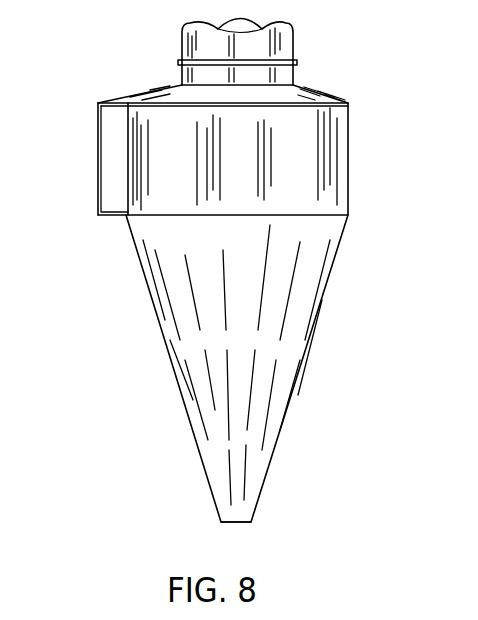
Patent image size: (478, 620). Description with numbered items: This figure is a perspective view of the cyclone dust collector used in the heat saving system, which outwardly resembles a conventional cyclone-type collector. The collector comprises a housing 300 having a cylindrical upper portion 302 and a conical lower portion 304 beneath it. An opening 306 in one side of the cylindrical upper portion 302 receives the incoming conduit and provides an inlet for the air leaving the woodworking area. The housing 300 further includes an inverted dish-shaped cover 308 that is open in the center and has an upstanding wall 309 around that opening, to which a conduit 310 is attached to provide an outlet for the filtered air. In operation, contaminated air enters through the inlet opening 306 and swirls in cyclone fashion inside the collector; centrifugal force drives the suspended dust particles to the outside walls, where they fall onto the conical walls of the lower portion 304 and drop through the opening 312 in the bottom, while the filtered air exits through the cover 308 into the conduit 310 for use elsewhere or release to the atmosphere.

The housing 300 is at (218, 281).
The cylindrical upper portion 302 is at (308, 160).
The conical lower portion 304 is at (252, 253).
The opening 306 is at (112, 145).
The inverted dish-shaped cover 308 is at (172, 95).
The upstanding wall 309 is at (283, 79).
The conduit 310 is at (278, 43).
The opening 312 is at (236, 522).